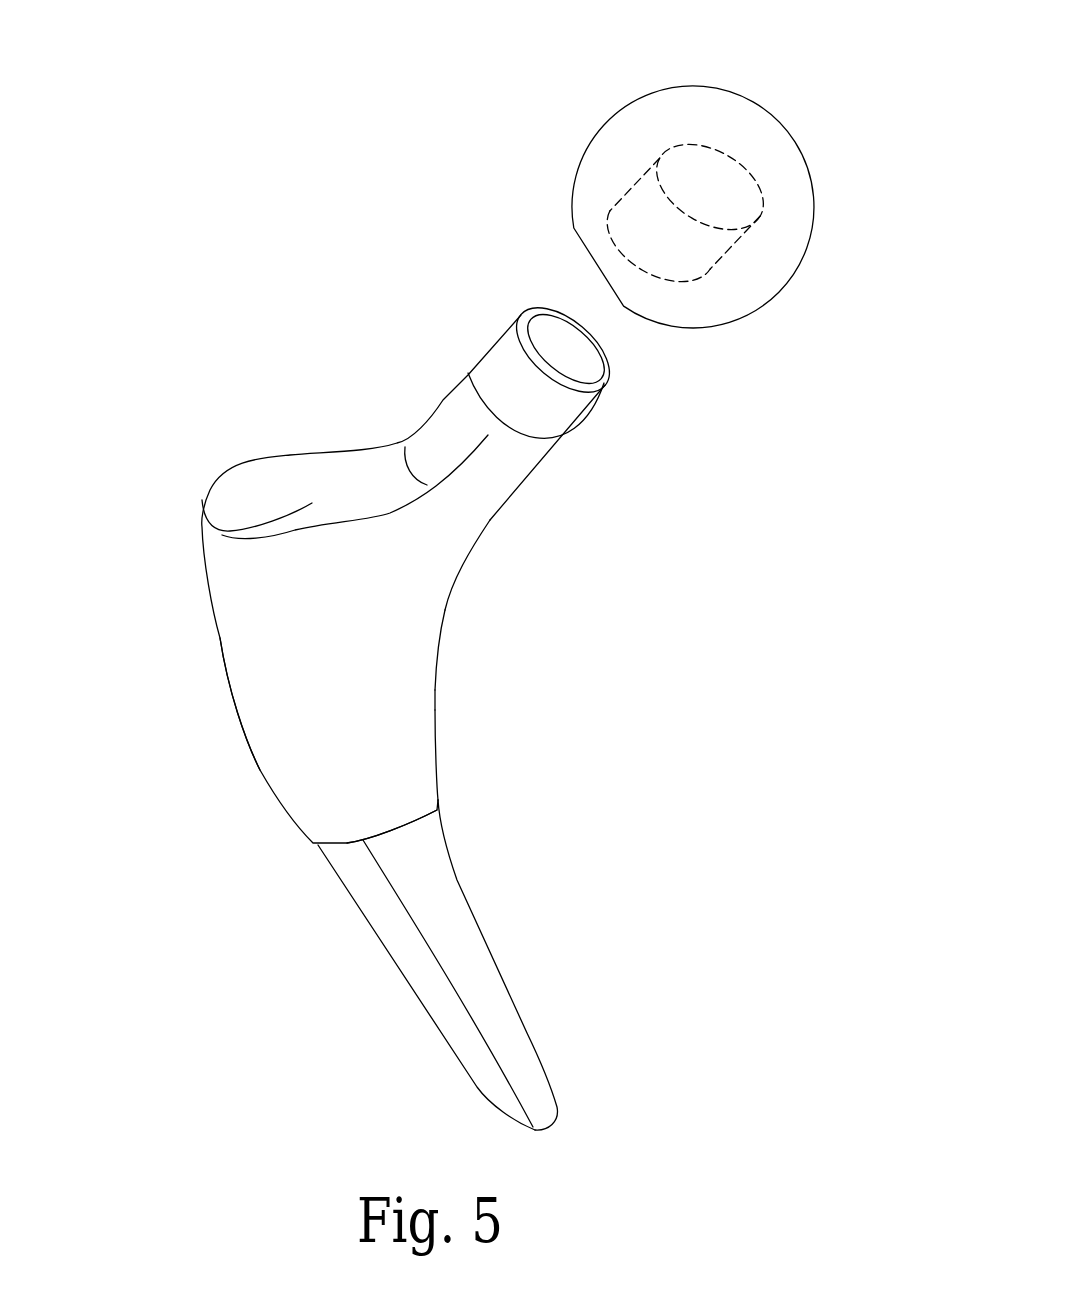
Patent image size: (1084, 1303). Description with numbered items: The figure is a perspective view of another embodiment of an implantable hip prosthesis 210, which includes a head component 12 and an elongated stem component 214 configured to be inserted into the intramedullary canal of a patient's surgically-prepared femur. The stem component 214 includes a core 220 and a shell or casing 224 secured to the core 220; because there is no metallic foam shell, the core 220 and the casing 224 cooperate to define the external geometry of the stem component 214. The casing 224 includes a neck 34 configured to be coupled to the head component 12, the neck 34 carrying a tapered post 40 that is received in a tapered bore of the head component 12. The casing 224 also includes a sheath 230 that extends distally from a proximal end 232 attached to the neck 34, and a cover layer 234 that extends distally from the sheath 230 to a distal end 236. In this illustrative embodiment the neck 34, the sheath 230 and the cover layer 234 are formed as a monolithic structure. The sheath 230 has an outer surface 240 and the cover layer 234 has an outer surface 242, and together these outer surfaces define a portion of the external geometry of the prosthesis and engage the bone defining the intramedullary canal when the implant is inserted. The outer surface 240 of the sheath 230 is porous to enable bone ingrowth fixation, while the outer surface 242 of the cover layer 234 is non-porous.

The head component 12 is at (790, 103).
The implantable hip prosthesis 210 is at (212, 348).
The tapered post 40 is at (580, 403).
The neck 34 is at (505, 487).
The proximal end 232 is at (452, 552).
The sheath 230 is at (435, 608).
The elongated stem component 214 is at (465, 663).
The casing 224 is at (428, 712).
The outer surface 240 is at (238, 675).
The distal end 236 is at (428, 818).
The core 220 is at (447, 883).
The outer surface 242 is at (358, 900).
The cover layer 234 is at (387, 937).